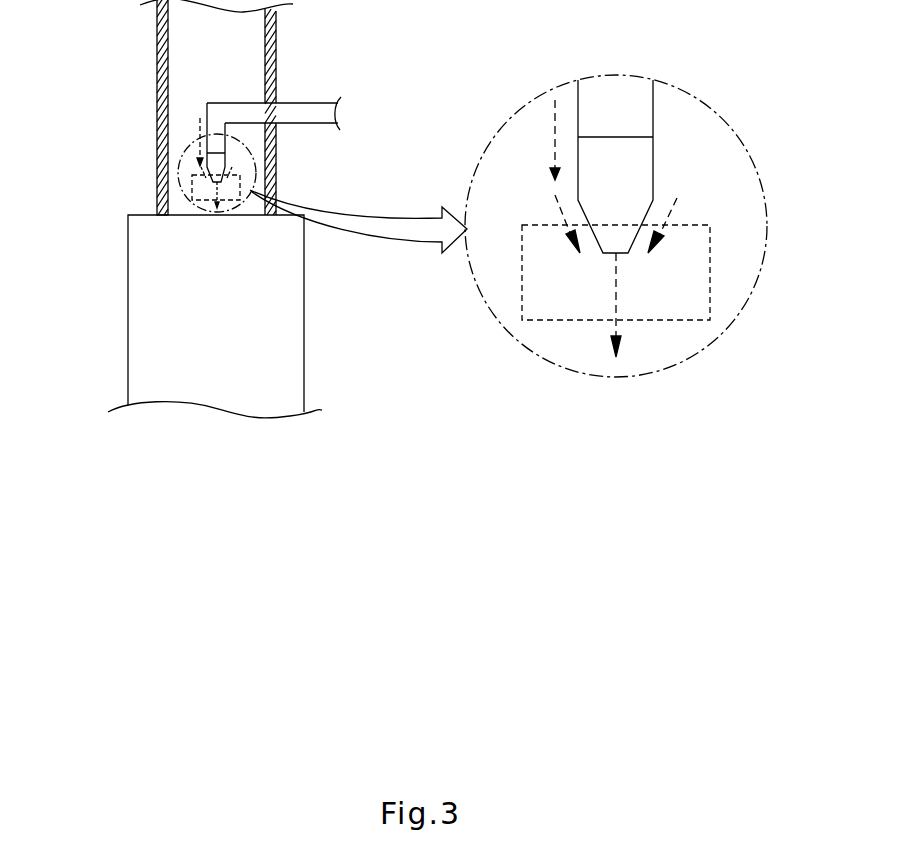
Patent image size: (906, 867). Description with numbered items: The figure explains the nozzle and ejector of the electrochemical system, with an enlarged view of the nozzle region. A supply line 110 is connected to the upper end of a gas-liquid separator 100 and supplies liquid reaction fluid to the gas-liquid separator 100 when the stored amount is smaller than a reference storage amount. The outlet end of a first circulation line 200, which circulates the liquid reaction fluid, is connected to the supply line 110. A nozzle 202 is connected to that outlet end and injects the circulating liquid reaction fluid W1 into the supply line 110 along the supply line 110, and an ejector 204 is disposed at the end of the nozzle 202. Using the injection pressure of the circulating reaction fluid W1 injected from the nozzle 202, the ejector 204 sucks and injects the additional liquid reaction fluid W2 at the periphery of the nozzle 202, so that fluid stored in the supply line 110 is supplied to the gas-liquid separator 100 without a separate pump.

The gas-liquid separator 100 is at (304, 323).
The supply line 110 is at (277, 163).
The first circulation line 200 is at (300, 108).
The nozzle 202 is at (207, 168).
The ejector 204 is at (192, 188).
The liquid reaction fluid (circulating reaction fluid) W1 is at (613, 327).
The liquid reaction fluid (additional reaction fluid) W2 is at (557, 218).